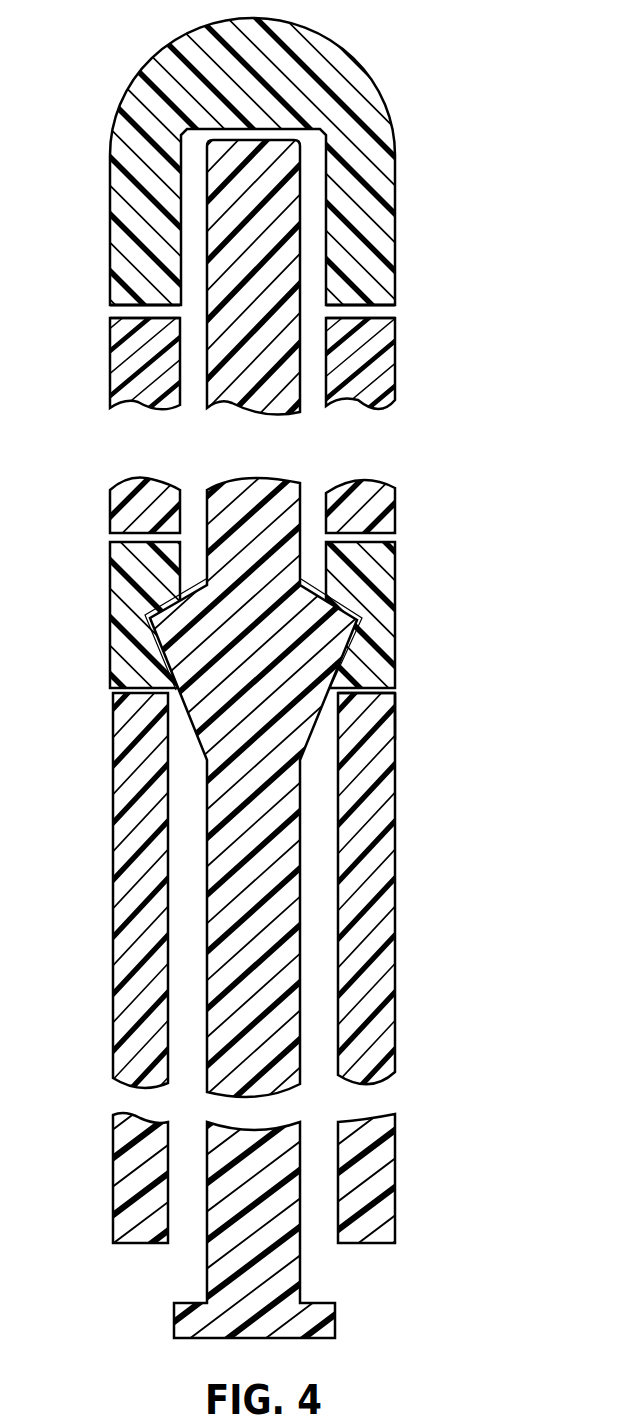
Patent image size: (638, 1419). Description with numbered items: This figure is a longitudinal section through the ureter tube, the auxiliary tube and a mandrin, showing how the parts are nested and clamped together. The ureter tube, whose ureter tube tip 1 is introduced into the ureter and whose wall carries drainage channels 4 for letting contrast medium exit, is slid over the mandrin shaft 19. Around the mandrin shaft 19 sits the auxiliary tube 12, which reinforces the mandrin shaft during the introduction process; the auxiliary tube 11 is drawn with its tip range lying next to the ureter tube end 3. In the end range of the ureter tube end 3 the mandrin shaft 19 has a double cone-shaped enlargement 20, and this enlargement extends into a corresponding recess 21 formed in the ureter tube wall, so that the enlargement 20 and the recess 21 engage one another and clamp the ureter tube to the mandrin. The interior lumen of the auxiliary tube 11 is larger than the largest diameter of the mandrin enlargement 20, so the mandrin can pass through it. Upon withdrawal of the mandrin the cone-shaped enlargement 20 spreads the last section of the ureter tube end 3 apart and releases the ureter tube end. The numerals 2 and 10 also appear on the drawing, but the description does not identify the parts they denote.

The ureter tube tip 1 is at (262, 18).
The outer wall 2 is at (110, 228).
The ureter tube end 3 is at (118, 510).
The drainage channels 4 is at (387, 312).
The base flange 10 is at (328, 1325).
The auxiliary tube 11 is at (372, 715).
The auxiliary tube 12 is at (127, 810).
The mandrin shaft 19 is at (287, 253).
The double cone-shaped enlargement 20 is at (340, 600).
The recess 21 is at (352, 631).